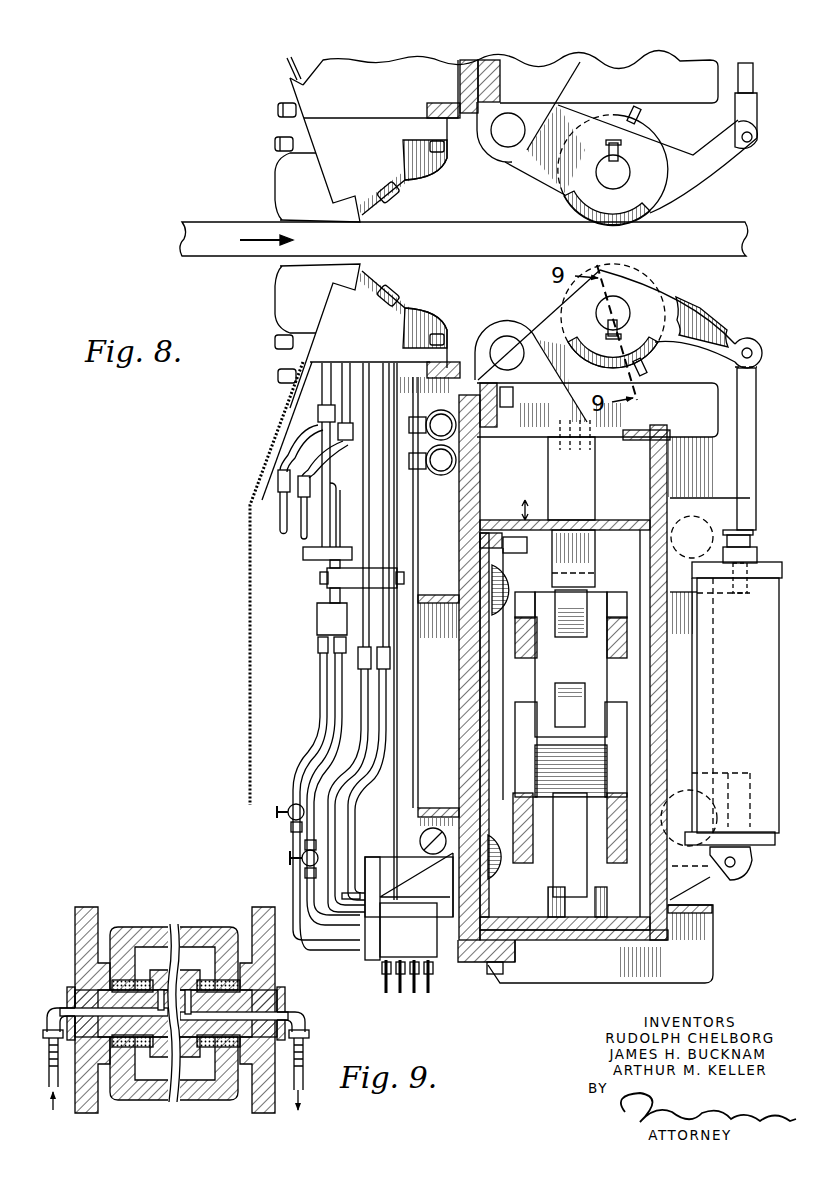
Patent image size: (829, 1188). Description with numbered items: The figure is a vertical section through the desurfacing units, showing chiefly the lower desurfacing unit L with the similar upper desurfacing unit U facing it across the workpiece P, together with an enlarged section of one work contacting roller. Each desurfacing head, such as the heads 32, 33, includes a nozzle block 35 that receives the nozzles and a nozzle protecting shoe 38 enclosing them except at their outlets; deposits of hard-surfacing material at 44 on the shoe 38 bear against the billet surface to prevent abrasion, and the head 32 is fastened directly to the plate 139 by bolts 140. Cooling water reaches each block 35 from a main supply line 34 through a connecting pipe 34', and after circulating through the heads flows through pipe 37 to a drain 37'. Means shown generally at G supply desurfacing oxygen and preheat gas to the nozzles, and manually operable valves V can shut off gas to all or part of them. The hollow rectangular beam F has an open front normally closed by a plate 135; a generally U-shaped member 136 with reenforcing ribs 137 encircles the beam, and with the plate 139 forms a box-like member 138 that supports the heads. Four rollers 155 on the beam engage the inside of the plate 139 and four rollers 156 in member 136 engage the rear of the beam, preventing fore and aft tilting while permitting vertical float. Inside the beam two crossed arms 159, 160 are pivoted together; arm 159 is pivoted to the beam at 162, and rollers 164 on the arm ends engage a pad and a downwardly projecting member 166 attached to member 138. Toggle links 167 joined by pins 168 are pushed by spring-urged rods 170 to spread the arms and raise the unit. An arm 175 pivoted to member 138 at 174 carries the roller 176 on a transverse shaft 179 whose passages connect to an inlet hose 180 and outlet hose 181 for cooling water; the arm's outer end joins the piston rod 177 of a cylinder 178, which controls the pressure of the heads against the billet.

In FIG. 8, the desurfacing head 32 is at (273, 300).
In FIG. 8, the desurfacing head 33 is at (270, 142).
In FIG. 8, the main supply line 34 is at (484, 455).
In FIG. 8, the connecting pipe 34' is at (293, 455).
In FIG. 8, the nozzle block 35 is at (348, 140).
In FIG. 8, the pipe 37 is at (284, 525).
In FIG. 8, the drain 37' is at (392, 637).
In FIG. 8, the nozzle protecting shoe 38 is at (283, 188).
In FIG. 8, the hard-surfacing deposits 44 is at (345, 223).
In FIG. 8, the plate 135 is at (468, 635).
In FIG. 8, the U-shaped member 136 is at (478, 62).
In FIG. 8, the reenforcing ribs 137 is at (700, 945).
In FIG. 8, the box-like member 138 is at (522, 945).
In FIG. 8, the plate 139 is at (355, 68).
In FIG. 8, the bolts 140 is at (447, 340).
In FIG. 8, the rollers 155 is at (470, 585).
In FIG. 8, the rollers 156 is at (715, 495).
In FIG. 8, the arm 159 is at (518, 800).
In FIG. 8, the arm 160 is at (522, 640).
In FIG. 8, the pivotal connection 162 is at (590, 847).
In FIG. 8, the roller 164 is at (575, 607).
In FIG. 8, the downwardly projecting member 166 is at (585, 478).
In FIG. 8, the toggle links 167 is at (582, 670).
In FIG. 8, the pins 168 is at (630, 717).
In FIG. 8, the rod 170 is at (560, 715).
In FIG. 8, the pivotal connection 174 is at (505, 135).
In FIG. 8, the arm 175 is at (708, 158).
In FIG. 9, the arm 175 is at (82, 945).
In FIG. 8, the work contacting roller 176 is at (576, 205).
In FIG. 9, the work contacting roller 176 is at (190, 937).
In FIG. 8, the piston rod 177 is at (755, 80).
In FIG. 8, the cylinder 178 is at (726, 731).
In FIG. 9, the shaft 179 is at (167, 1040).
In FIG. 8, the fluid inlet hose 180 is at (643, 114).
In FIG. 9, the fluid inlet hose 180 is at (54, 1062).
In FIG. 8, the fluid outlet hose 181 is at (606, 150).
In FIG. 9, the fluid outlet hose 181 is at (298, 1070).
In FIG. 8, the paper web P is at (210, 230).
In FIG. 8, the upper desurfacing unit U is at (430, 56).
In FIG. 8, the lower desurfacing unit L is at (243, 504).
In FIG. 8, the gas supplying means G is at (300, 608).
In FIG. 8, the manually operable valves V is at (283, 858).
In FIG. 8, the beam F is at (610, 522).